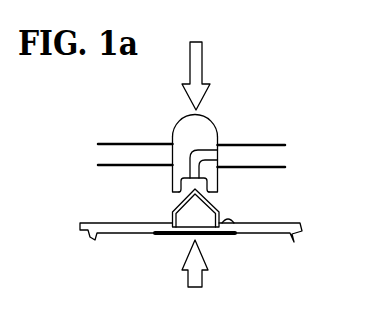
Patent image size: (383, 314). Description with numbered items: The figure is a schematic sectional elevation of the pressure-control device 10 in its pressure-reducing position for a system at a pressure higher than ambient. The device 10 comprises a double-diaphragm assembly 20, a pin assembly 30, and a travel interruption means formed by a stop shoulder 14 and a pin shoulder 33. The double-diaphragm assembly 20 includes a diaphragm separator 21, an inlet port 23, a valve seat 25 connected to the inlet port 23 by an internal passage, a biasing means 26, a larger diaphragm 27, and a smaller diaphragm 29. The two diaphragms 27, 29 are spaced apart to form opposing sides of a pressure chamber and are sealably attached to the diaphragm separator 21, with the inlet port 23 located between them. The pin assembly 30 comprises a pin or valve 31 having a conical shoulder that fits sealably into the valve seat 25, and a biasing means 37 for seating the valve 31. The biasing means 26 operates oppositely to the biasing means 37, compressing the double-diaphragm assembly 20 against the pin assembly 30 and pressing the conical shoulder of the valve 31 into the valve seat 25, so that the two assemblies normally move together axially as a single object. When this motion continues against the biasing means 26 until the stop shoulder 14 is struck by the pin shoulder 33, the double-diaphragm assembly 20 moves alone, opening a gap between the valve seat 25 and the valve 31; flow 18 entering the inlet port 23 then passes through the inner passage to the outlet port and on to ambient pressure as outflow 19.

The pressure-control device 10 is at (282, 92).
The stop shoulder 14 is at (138, 229).
The flow 18 is at (222, 154).
The outflow 19 is at (168, 198).
The double-diaphragm assembly 20 is at (170, 118).
The diaphragm separator 21 is at (212, 121).
The inlet port 23 is at (221, 147).
The valve seat 25 is at (215, 193).
The biasing means 26 is at (204, 62).
The larger diaphragm 27 is at (280, 144).
The smaller diaphragm 29 is at (285, 168).
The pin assembly 30 is at (112, 206).
The pin or valve 31 is at (186, 202).
The pin shoulder 33 is at (240, 227).
The biasing means 37 is at (202, 279).